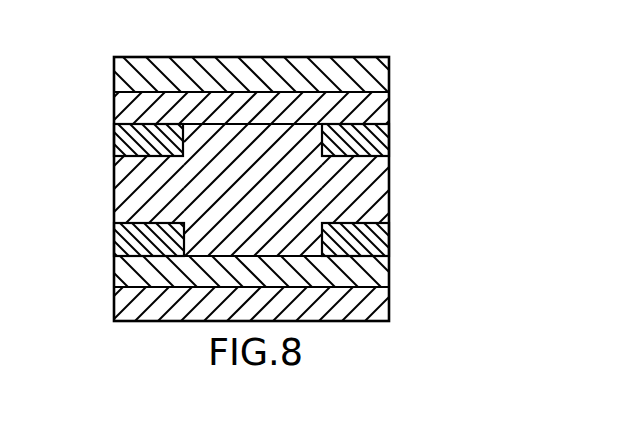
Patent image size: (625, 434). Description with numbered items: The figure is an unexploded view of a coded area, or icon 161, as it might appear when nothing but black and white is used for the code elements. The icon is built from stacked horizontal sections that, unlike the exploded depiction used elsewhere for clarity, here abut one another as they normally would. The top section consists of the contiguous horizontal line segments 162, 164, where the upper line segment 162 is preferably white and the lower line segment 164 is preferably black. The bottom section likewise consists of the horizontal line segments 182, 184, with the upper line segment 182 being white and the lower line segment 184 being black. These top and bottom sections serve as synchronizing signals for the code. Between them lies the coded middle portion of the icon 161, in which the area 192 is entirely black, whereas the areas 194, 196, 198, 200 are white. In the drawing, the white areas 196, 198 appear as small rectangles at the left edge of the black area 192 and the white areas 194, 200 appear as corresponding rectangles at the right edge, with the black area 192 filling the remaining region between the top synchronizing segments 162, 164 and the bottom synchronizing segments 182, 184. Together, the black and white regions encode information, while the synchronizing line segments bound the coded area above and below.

The icon 161 is at (380, 46).
The upper line segment 162 is at (389, 71).
The lower line segment 164 is at (389, 105).
The area 192 is at (389, 192).
The area 194 is at (389, 139).
The area 196 is at (122, 141).
The area 198 is at (122, 235).
The area 200 is at (389, 235).
The upper line segment 182 is at (389, 270).
The lower line segment 184 is at (389, 303).